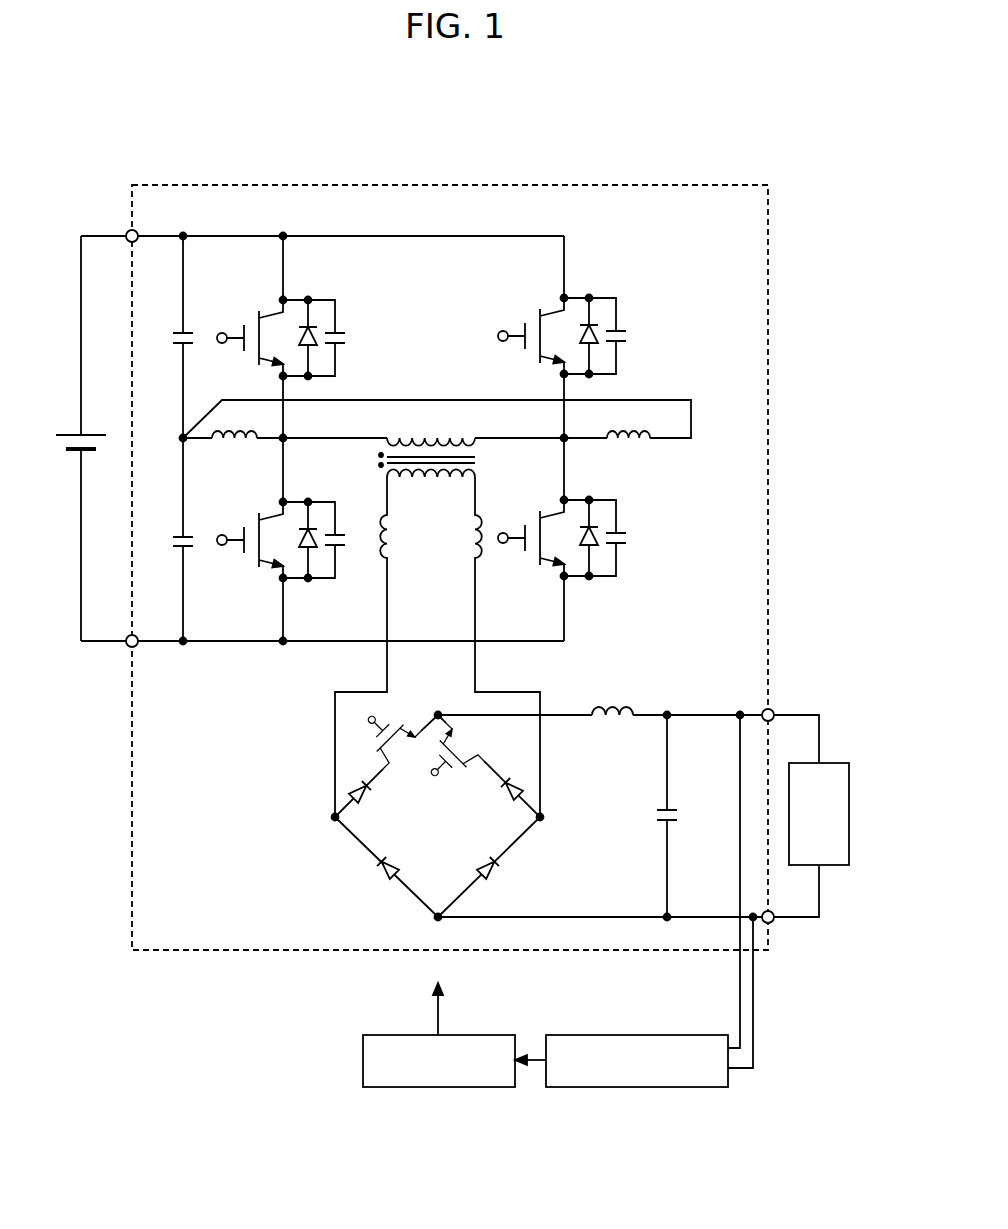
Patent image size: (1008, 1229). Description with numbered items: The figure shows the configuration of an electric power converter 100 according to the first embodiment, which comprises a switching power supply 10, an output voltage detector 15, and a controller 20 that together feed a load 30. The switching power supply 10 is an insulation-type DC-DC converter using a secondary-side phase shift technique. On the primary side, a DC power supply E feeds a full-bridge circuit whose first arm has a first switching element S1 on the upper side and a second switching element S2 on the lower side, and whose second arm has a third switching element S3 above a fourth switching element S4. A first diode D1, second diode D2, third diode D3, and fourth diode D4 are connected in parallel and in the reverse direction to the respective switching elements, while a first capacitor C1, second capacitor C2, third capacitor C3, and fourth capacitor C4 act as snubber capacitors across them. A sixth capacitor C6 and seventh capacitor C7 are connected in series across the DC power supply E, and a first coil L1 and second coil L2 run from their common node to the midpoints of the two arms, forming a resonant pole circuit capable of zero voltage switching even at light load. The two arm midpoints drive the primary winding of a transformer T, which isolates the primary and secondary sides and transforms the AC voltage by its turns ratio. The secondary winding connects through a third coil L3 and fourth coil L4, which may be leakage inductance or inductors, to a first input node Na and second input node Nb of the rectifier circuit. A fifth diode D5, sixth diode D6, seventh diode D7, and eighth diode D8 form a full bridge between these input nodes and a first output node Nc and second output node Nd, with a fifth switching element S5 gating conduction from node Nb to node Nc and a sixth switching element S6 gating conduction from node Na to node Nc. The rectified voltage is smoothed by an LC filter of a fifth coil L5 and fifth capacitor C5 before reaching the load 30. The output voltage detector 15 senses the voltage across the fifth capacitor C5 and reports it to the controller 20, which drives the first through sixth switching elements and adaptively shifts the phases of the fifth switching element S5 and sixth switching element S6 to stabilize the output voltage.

The electric power converter 100 is at (460, 166).
The switching power supply 10 is at (734, 184).
The output voltage detector 15 is at (704, 1035).
The controller 20 is at (488, 1035).
The load 30 is at (836, 763).
The DC power supply E is at (70, 438).
The transformer T is at (471, 463).
The first switching element S1 is at (252, 334).
The second switching element S2 is at (252, 536).
The third switching element S3 is at (533, 332).
The fourth switching element S4 is at (533, 534).
The fifth switching element S5 is at (451, 758).
The sixth switching element S6 is at (386, 734).
The first diode D1 is at (314, 325).
The second diode D2 is at (314, 527).
The third diode D3 is at (595, 323).
The fourth diode D4 is at (595, 525).
The fifth diode D5 is at (515, 776).
The sixth diode D6 is at (476, 859).
The seventh diode D7 is at (356, 779).
The eighth diode D8 is at (377, 878).
The first capacitor C1 is at (338, 338).
The second capacitor C2 is at (338, 540).
The third capacitor C3 is at (619, 336).
The fourth capacitor C4 is at (619, 538).
The fifth capacitor C5 is at (653, 816).
The sixth capacitor C6 is at (161, 337).
The seventh capacitor C7 is at (166, 539).
The first coil L1 is at (234, 448).
The second coil L2 is at (628, 446).
The third coil L3 is at (374, 647).
The fourth coil L4 is at (494, 647).
The fifth coil L5 is at (612, 724).
The first input node Na is at (320, 822).
The second input node Nb is at (556, 822).
The first output node Nc is at (437, 704).
The second output node Nd is at (437, 931).